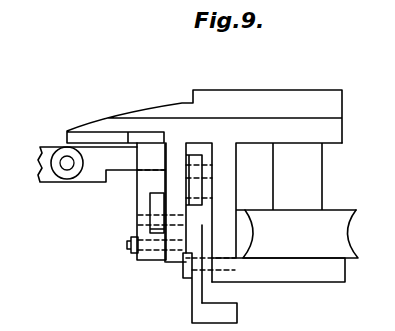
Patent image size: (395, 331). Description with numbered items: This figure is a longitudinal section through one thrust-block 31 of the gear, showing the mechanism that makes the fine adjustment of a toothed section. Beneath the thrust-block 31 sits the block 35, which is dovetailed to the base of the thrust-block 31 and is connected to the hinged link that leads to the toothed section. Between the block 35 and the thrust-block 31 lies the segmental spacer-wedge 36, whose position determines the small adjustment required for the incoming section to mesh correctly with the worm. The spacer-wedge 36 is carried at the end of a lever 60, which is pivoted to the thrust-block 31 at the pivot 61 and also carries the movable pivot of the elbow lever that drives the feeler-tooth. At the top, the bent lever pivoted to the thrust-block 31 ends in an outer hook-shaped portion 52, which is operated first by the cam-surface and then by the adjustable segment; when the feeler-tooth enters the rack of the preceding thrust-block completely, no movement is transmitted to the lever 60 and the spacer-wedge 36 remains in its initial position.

The thrust-block 31 is at (177, 147).
The block 35 is at (90, 168).
The spacer-wedge 36 is at (150, 160).
The lever 60 is at (143, 220).
The pivot 61 is at (128, 248).
The hook-shaped portion 52 is at (231, 312).